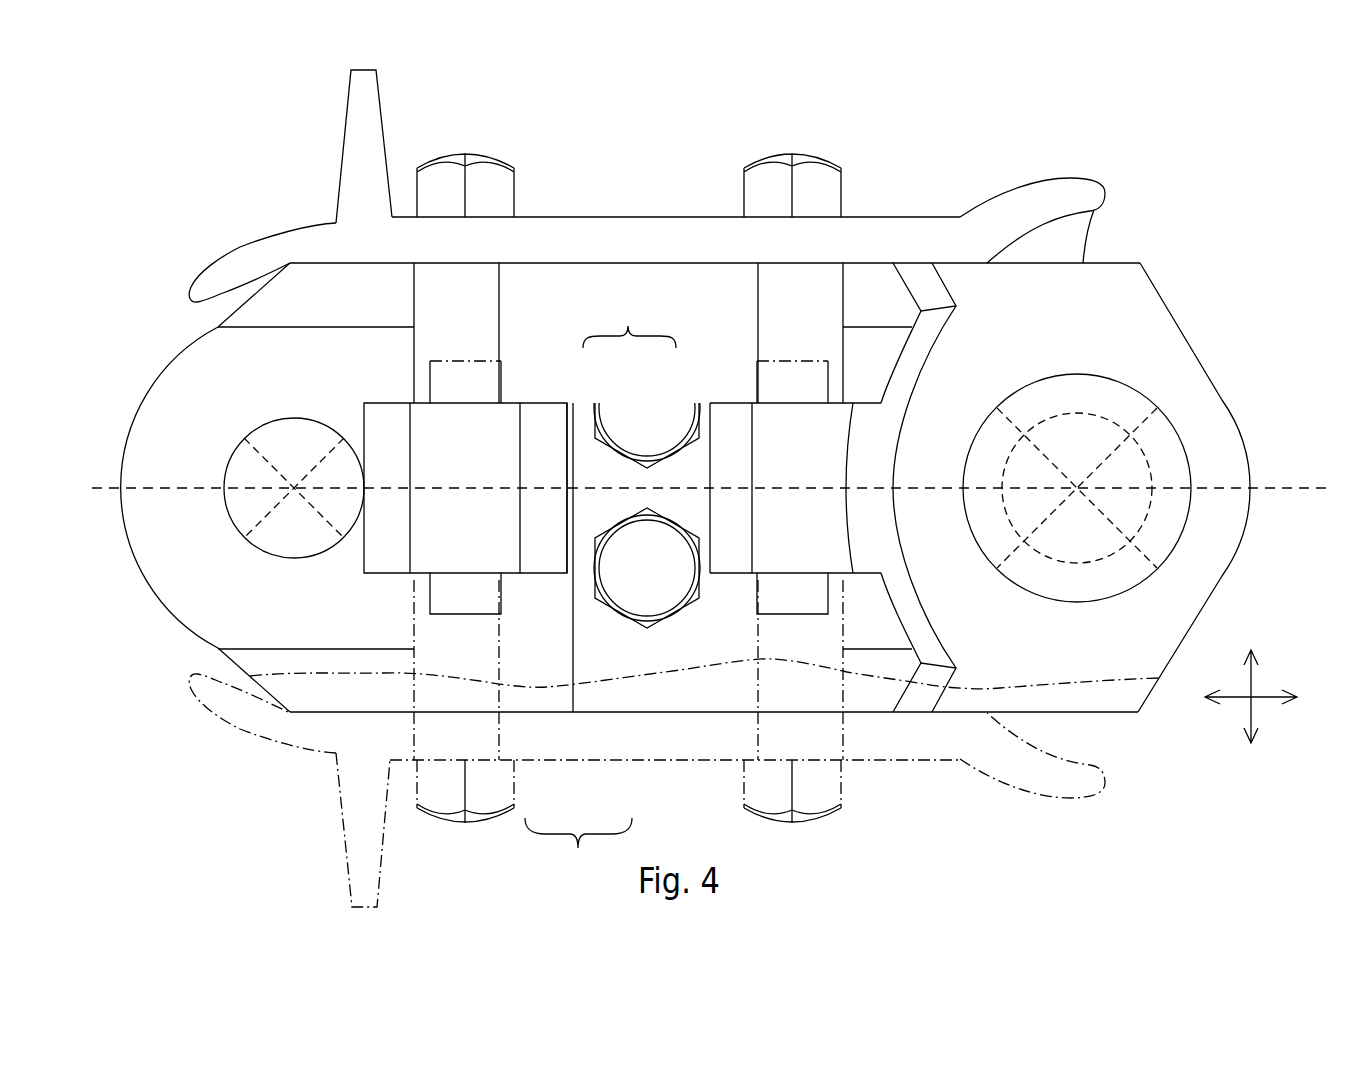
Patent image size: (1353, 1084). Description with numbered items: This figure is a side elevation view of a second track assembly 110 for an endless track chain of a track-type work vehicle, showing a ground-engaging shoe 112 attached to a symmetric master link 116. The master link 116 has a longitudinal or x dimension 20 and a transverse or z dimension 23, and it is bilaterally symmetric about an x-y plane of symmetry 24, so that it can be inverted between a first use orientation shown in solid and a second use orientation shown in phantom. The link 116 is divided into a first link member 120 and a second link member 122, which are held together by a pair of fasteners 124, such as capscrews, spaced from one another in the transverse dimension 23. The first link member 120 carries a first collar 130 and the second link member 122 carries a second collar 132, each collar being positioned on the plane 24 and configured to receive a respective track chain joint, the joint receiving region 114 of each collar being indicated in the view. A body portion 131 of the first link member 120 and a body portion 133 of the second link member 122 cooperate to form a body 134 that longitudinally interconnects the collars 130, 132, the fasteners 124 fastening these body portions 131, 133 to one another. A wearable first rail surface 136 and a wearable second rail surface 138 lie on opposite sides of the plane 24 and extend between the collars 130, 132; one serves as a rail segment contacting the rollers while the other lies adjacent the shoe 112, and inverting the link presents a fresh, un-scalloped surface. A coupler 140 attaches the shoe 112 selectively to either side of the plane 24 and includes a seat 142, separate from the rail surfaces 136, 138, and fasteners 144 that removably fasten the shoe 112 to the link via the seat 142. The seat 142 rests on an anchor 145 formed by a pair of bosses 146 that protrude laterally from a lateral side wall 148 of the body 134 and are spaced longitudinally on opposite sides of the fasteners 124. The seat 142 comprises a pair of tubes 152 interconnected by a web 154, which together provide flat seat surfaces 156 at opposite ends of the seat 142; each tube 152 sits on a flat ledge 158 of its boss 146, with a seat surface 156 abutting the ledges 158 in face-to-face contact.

The track assembly 110 is at (275, 151).
The ground-engaging shoe 112 is at (348, 108).
The bore 114 is at (238, 460).
The master link 116 is at (250, 773).
The first link member 120 is at (405, 687).
The second link member 122 is at (780, 687).
The fasteners 124 is at (610, 571).
The first collar 130 is at (200, 587).
The body portion 131 is at (523, 693).
The second collar 132 is at (1125, 303).
The body portion 133 is at (647, 693).
The body 134 is at (578, 851).
The first rail surface 136 is at (1085, 232).
The second rail surface 138 is at (680, 670).
The coupler 140 is at (345, 583).
The seat 142 is at (643, 268).
The fasteners 144 is at (478, 160).
The anchor 145 is at (629, 320).
The bosses 146 is at (628, 432).
The lateral side wall 148 is at (878, 297).
The tubes 152 is at (458, 317).
The web 154 is at (537, 280).
The flat seat surfaces 156 is at (568, 263).
The flat ledge 158 is at (390, 403).
The longitudinal dimension 20 is at (1233, 693).
The transverse dimension 23 is at (1240, 712).
The x-y plane of symmetry 24 is at (1276, 488).